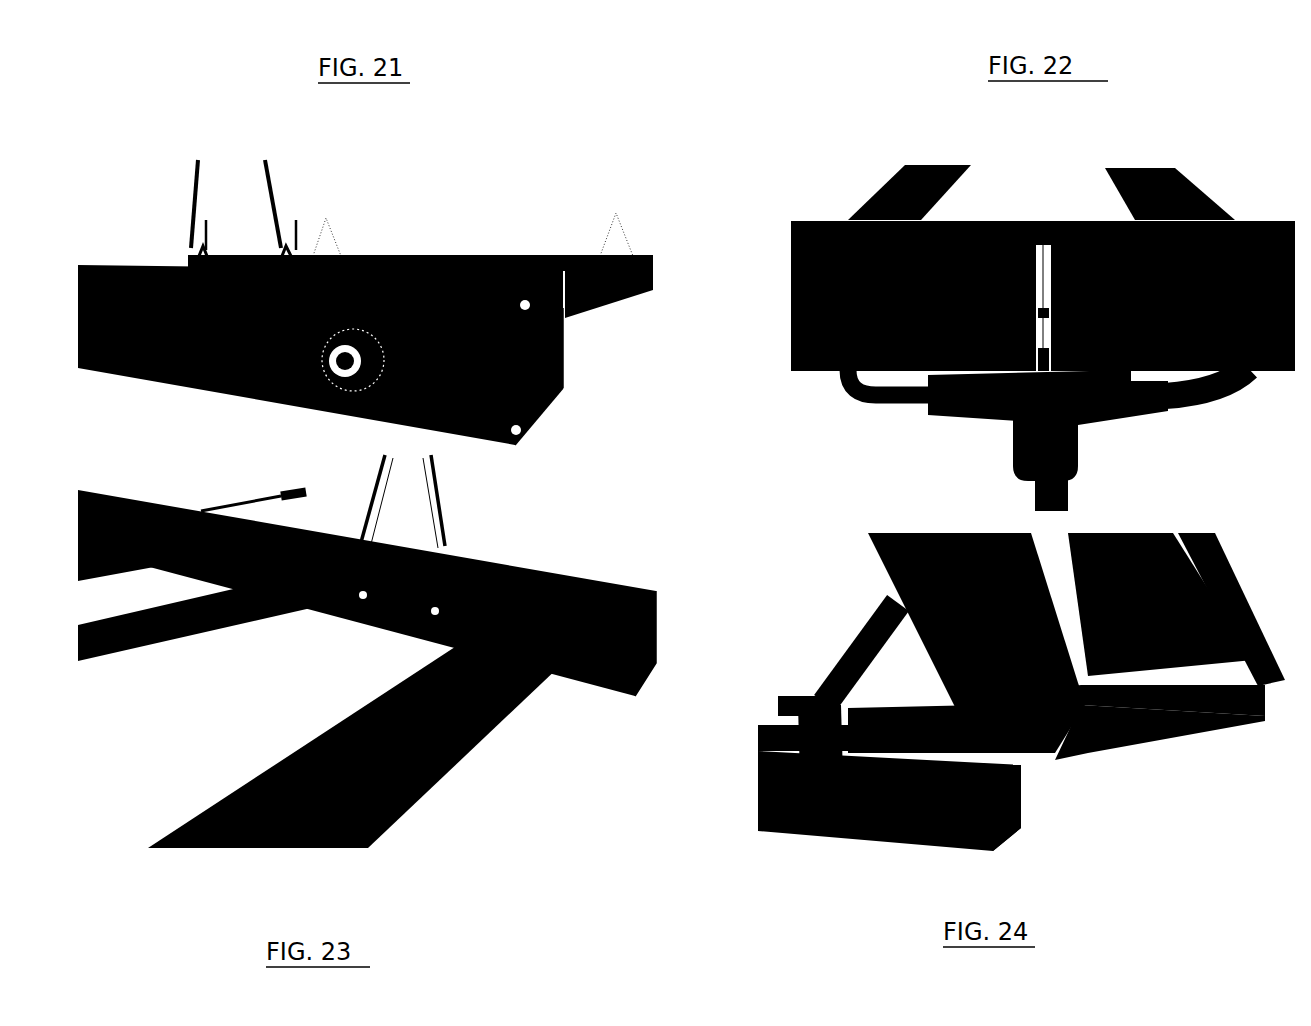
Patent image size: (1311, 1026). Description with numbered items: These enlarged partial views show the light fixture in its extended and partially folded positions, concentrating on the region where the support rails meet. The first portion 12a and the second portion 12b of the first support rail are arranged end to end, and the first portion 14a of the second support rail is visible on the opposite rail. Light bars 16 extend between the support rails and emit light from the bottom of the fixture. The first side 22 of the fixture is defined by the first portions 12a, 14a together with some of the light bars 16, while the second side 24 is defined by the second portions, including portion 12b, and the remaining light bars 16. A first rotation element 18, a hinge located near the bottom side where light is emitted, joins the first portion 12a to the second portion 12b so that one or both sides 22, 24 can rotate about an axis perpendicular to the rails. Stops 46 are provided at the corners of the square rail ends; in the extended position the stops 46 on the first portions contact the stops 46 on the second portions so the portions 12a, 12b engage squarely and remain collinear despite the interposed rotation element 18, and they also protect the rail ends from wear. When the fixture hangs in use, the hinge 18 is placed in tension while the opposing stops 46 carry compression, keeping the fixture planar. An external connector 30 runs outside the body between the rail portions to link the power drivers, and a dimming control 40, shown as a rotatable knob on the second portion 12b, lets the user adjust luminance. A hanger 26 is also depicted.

In FIG. 21, the first portion of the first support rail 12a is at (520, 425).
In FIG. 22, the first portion of the first support rail 12a is at (1232, 213).
In FIG. 24, the first portion of the first support rail 12a is at (818, 840).
In FIG. 23, the second portion of the first support rail 12b is at (560, 565).
In FIG. 22, the second portion of the first support rail 12b is at (815, 213).
In FIG. 24, the second portion of the first support rail 12b is at (860, 541).
In FIG. 21, the first portion of the second support rail 14a is at (645, 253).
In FIG. 21, the light bars 16 is at (600, 290).
In FIG. 23, the light bars 16 is at (395, 770).
In FIG. 22, the light bars 16 is at (1137, 160).
In FIG. 24, the light bars 16 is at (1140, 727).
In FIG. 24, the first rotation element 18 is at (1018, 775).
In FIG. 21, the first side 22 is at (500, 240).
In FIG. 24, the first side 22 is at (750, 812).
In FIG. 23, the second side 24 is at (455, 533).
In FIG. 24, the second side 24 is at (1230, 572).
In FIG. 21, the hanger hook 26 is at (618, 186).
In FIG. 22, the external connector 30 is at (1080, 452).
In FIG. 24, the external connector 30 is at (815, 663).
In FIG. 21, the dimming control 40 is at (312, 405).
In FIG. 21, the stops 46 is at (556, 386).
In FIG. 23, the stops 46 is at (630, 682).
In FIG. 22, the stops 46 is at (1034, 213).
In FIG. 24, the stops 46 is at (1015, 823).